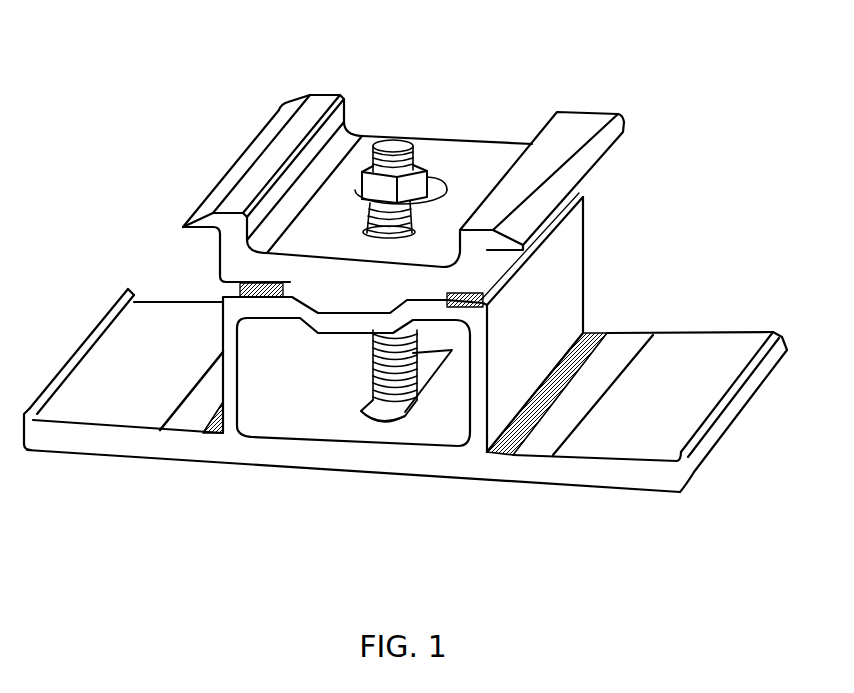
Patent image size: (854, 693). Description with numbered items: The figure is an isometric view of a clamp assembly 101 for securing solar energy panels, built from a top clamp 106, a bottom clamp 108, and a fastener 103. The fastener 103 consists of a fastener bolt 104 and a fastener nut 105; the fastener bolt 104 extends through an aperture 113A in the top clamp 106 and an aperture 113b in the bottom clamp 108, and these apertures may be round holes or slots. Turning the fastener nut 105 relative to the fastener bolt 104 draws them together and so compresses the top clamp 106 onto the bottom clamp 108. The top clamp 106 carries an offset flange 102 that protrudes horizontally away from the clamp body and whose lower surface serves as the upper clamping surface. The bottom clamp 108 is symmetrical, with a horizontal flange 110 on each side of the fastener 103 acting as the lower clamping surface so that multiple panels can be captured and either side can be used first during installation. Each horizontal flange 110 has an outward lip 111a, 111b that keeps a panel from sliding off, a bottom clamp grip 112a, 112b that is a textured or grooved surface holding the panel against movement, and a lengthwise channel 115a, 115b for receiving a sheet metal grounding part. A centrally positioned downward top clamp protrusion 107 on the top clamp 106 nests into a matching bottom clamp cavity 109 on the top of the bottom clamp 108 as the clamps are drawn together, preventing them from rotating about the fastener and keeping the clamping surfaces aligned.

The clamp assembly 101 is at (165, 103).
The offset flange 102 is at (592, 128).
The fastener 103 is at (394, 132).
The fastener bolt 104 is at (362, 408).
The fastener nut 105 is at (414, 170).
The top clamp 106 is at (347, 143).
The top clamp protrusion 107 is at (347, 293).
The bottom clamp 108 is at (492, 468).
The bottom clamp cavity 109 is at (353, 292).
The horizontal flange 110 is at (166, 307).
The lip 111a is at (62, 370).
The lip 111b is at (777, 334).
The bottom clamp grip 112a is at (602, 326).
The bottom clamp grip 112b is at (200, 433).
The aperture 113A is at (290, 313).
The aperture 113b is at (380, 423).
The channel 115a is at (192, 420).
The channel 115b is at (637, 347).